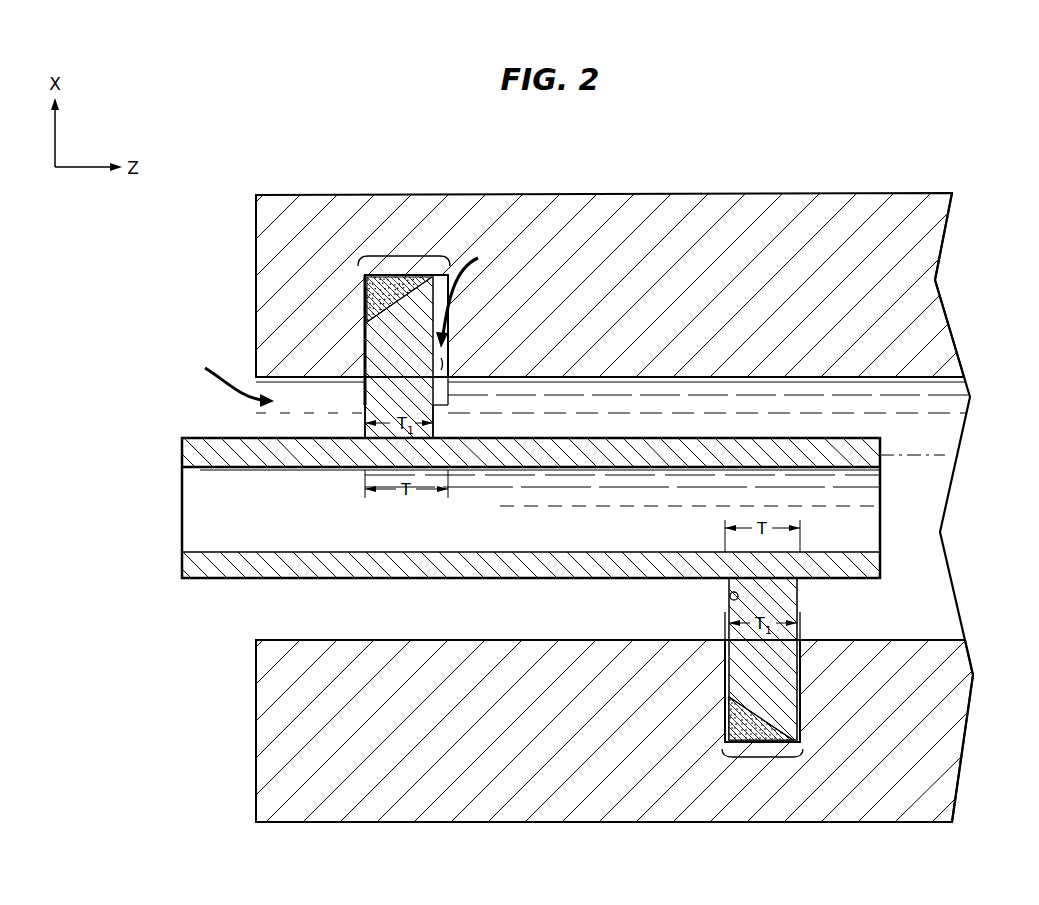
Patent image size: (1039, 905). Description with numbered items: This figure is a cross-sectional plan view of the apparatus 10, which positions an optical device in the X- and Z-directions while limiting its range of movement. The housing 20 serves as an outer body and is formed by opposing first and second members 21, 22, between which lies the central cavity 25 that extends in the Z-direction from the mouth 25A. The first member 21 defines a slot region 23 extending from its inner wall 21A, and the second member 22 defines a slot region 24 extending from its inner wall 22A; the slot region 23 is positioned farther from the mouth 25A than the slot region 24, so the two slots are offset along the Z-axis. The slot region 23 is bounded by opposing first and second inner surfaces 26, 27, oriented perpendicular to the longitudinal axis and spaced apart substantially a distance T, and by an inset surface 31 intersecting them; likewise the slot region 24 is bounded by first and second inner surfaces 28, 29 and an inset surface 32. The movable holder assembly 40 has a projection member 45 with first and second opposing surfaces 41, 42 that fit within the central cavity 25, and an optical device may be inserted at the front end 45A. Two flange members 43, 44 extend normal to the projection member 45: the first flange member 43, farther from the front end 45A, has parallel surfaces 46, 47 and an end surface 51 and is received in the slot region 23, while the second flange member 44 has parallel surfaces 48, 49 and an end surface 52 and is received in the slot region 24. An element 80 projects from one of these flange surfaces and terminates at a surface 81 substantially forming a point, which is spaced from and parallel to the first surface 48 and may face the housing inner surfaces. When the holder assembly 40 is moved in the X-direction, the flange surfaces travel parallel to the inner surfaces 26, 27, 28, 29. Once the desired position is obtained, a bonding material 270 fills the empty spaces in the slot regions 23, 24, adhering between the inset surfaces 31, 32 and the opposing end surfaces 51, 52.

The apparatus 10 is at (746, 142).
The housing 20 is at (436, 843).
The first member 21 is at (562, 775).
The inner wall of first member 21A is at (430, 640).
The second member 22 is at (298, 213).
The inner wall of second member 22A is at (660, 378).
The slot region 23 is at (767, 757).
The slot region 24 is at (405, 255).
The central cavity 25 is at (913, 477).
The mouth 25A is at (226, 374).
The first inner surface 26 is at (727, 683).
The second inner surface 27 is at (803, 690).
The first inner surface 28 is at (366, 312).
The second inner surface 29 is at (450, 308).
The inset surface 31 is at (727, 757).
The inset surface 32 is at (448, 262).
The holder assembly 40 is at (178, 600).
The first opposing surface 41 is at (217, 582).
The second opposing surface 42 is at (206, 437).
The first flange member 43 is at (772, 592).
The second flange member 44 is at (405, 373).
The projection member 45 is at (196, 497).
The front end 45A is at (183, 460).
The first parallel surface 46 is at (730, 596).
The second parallel surface 47 is at (800, 624).
The first parallel surface 48 is at (365, 428).
The second parallel surface 49 is at (450, 418).
The end surface 51 is at (758, 716).
The end surface 52 is at (398, 300).
The element 80 is at (468, 295).
The surface 81 is at (446, 365).
The bonding material 270 is at (395, 272).